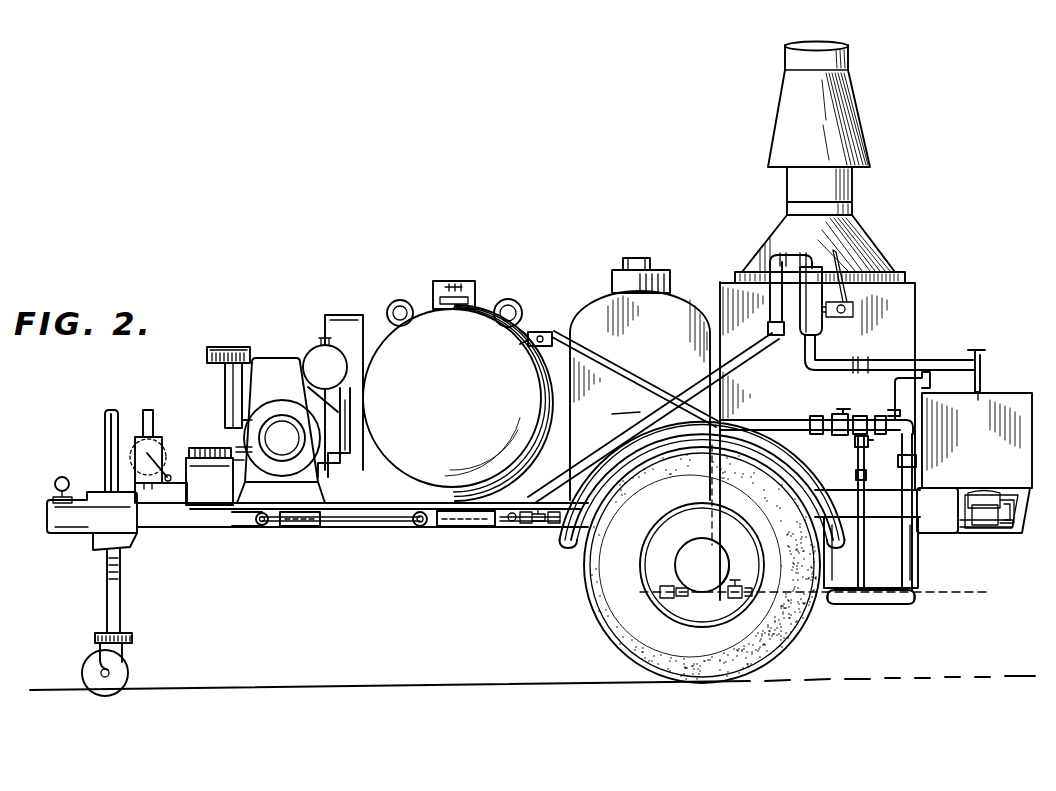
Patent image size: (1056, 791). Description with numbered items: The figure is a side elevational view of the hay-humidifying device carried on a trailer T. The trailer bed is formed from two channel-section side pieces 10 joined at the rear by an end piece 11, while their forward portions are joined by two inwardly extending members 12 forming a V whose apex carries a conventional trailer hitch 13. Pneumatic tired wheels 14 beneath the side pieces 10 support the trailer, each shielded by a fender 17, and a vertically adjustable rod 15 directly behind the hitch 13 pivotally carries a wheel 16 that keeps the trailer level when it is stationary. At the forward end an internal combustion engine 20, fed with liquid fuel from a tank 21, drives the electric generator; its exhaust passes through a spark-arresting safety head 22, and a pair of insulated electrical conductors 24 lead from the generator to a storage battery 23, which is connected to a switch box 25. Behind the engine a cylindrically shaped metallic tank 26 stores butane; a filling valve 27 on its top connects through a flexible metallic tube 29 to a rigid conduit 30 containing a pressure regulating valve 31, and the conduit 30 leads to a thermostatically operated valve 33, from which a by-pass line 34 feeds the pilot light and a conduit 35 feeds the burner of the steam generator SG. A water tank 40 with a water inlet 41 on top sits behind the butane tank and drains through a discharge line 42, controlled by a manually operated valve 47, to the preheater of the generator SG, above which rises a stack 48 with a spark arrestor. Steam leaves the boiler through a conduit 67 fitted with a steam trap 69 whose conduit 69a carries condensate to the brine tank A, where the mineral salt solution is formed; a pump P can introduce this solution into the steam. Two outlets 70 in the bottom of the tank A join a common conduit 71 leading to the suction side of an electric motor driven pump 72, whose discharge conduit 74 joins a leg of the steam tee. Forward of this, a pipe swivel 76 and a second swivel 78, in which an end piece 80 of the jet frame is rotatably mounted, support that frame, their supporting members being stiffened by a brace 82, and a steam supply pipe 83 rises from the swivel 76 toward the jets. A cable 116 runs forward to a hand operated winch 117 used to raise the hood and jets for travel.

The side pieces 10 is at (562, 494).
The end piece 11 is at (952, 530).
The inwardly extending members 12 is at (177, 518).
The trailer hitch 13 is at (54, 485).
The pneumatic tired wheels 14 is at (600, 622).
The vertically adjustable rod 15 is at (106, 433).
The wheel 16 is at (120, 668).
The fender 17 is at (780, 440).
The internal combustion engine 20 is at (284, 472).
The tank 21 is at (325, 338).
The safety head 22 is at (232, 346).
The storage battery 23 is at (215, 505).
The insulated electrical conductors 24 is at (242, 448).
The switch box 25 is at (348, 320).
The cylindrically shaped metallic tank 26 is at (440, 455).
The filling valve 27 is at (470, 303).
The flexible metallic tube 29 is at (540, 330).
The rigid pipe or conduit 30 is at (618, 364).
The pressure regulating valve 31 is at (560, 333).
The thermostatically operated valve 33 is at (855, 415).
The by-pass line 34 is at (866, 536).
The conduit 35 is at (906, 570).
The water tank 40 is at (625, 403).
The water inlet 41 is at (664, 290).
The discharge line 42 is at (765, 612).
The manually operated valve 47 is at (706, 630).
The stack 48 is at (805, 132).
The steam generator SG is at (905, 310).
The conduit 67 is at (767, 346).
The steam trap 69 is at (824, 328).
The conduit 69a is at (905, 357).
The tank A is at (998, 405).
The outlets 70 is at (995, 497).
The common conduit 71 is at (1016, 510).
The electric motor driven pump 72 is at (957, 512).
The conduit 74 is at (990, 530).
The pipe swivel 76 is at (464, 527).
The swivel 78 is at (263, 526).
The end piece 80 is at (262, 527).
The brace 82 is at (353, 550).
The steam supply pipe 83 is at (420, 527).
The pump P is at (976, 540).
The trailer T is at (386, 548).
The cable 116 is at (164, 432).
The hand operated winch 117 is at (135, 456).